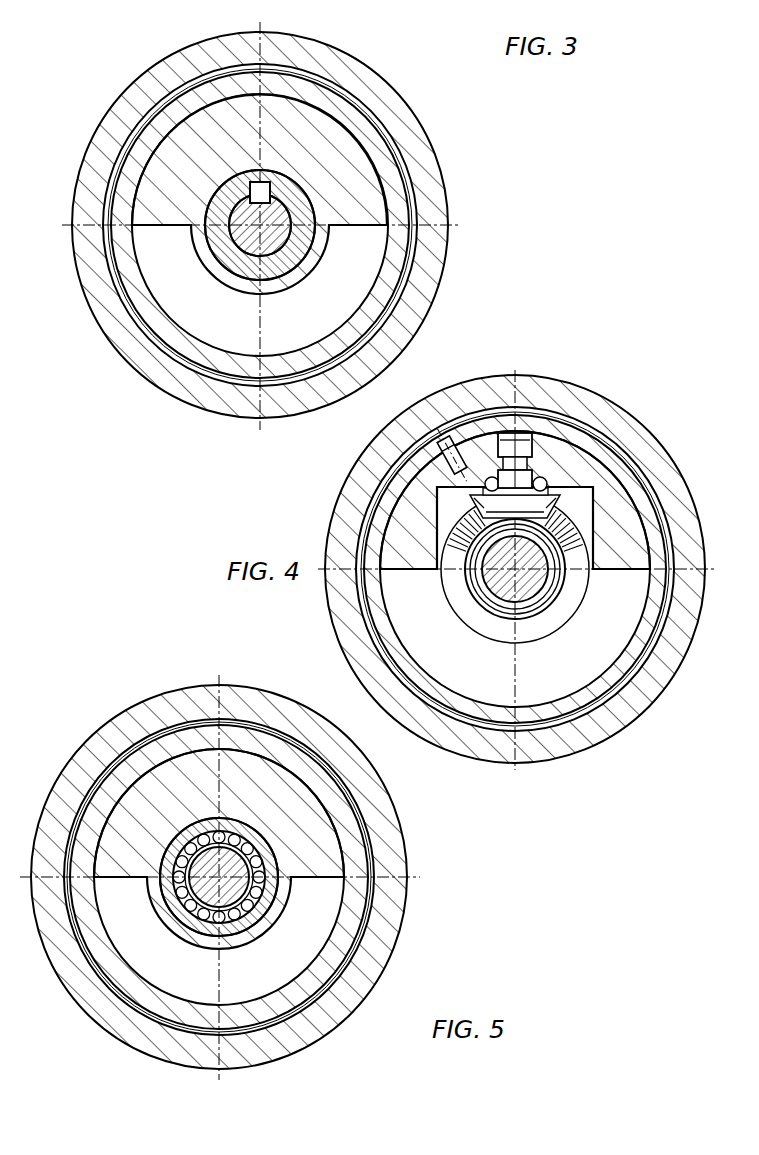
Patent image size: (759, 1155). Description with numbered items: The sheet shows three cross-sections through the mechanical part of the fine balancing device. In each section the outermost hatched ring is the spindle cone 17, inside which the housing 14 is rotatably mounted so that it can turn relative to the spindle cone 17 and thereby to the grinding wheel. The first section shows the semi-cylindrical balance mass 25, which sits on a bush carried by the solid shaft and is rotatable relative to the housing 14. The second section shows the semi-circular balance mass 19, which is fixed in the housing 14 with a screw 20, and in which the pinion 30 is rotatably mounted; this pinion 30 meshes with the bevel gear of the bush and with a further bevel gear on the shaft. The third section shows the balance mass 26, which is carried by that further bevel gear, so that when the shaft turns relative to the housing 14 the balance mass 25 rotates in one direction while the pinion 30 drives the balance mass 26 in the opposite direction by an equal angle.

In FIG. 3, the housing 14 is at (370, 128).
In FIG. 4, the housing 14 is at (605, 452).
In FIG. 5, the housing 14 is at (352, 940).
In FIG. 3, the spindle cone 17 is at (420, 150).
In FIG. 4, the spindle cone 17 is at (658, 463).
In FIG. 5, the spindle cone 17 is at (390, 920).
In FIG. 4, the balance mass 19 is at (567, 462).
In FIG. 4, the screw 20 is at (452, 430).
In FIG. 3, the balance mass 25 is at (370, 197).
In FIG. 5, the balance mass 26 is at (328, 862).
In FIG. 4, the pinion 30 is at (520, 445).